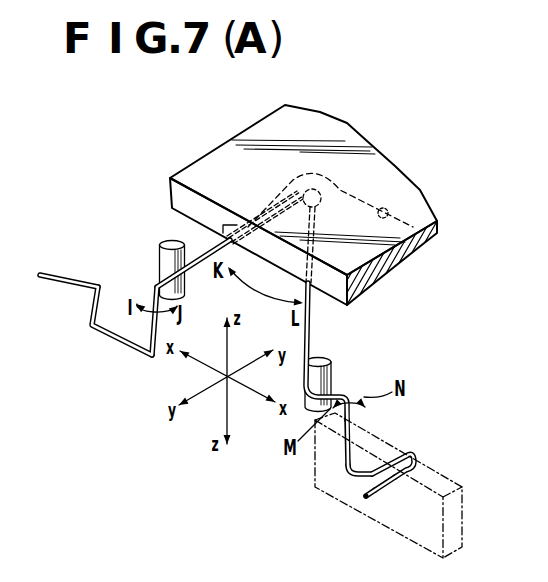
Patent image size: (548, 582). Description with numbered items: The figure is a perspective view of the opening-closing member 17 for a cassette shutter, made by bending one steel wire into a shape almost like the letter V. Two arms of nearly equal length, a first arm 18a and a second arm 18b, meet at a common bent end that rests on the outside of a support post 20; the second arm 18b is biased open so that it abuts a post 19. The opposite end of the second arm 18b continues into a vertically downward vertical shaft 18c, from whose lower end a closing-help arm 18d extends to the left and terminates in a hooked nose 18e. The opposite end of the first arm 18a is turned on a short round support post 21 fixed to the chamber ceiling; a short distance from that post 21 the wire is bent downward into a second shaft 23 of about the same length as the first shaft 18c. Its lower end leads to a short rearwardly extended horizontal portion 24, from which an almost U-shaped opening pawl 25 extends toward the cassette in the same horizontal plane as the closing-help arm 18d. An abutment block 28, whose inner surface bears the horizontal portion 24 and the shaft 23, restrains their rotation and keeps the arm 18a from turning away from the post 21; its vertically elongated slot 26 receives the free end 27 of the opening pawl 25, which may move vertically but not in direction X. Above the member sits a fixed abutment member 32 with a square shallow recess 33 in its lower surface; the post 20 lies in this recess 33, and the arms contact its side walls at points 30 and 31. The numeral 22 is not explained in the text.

The opening-closing member 17 is at (323, 328).
The first arm 18a is at (318, 299).
The second arm 18b is at (207, 250).
The vertical shaft 18c is at (148, 346).
The closing-help arm 18d is at (100, 333).
The hooked nose 18e is at (80, 282).
The post 19 is at (170, 240).
The support post 20 is at (305, 193).
The support post 21 is at (322, 361).
The knurled portion of pin 22 is at (167, 267).
The second shaft 23 is at (352, 421).
The horizontal portion 24 is at (347, 482).
The opening pawl 25 is at (414, 460).
The slot 26 is at (366, 505).
The free end 27 is at (390, 493).
The abutment block 28 is at (443, 478).
The contact point 30 is at (236, 238).
The contact point 31 is at (313, 278).
The abutment member 32 is at (376, 160).
The recess 33 is at (397, 207).